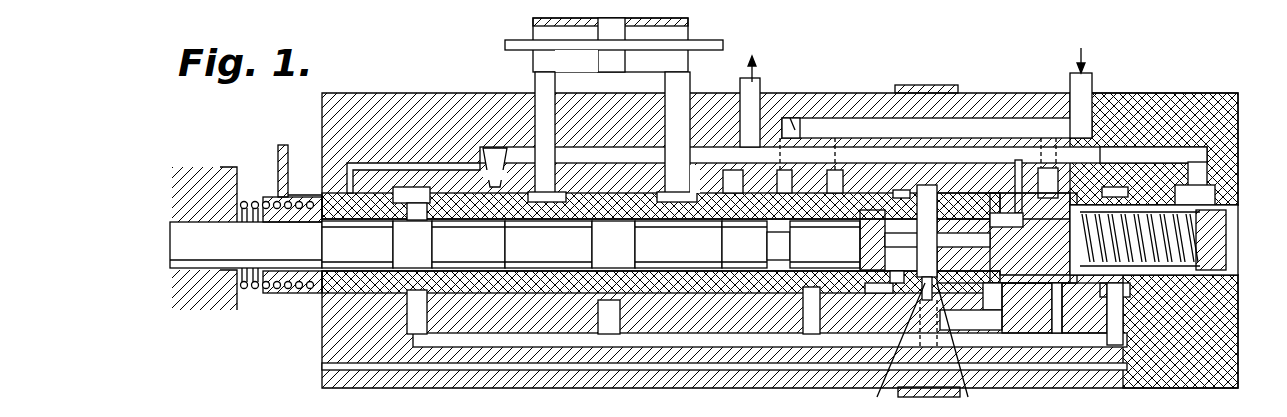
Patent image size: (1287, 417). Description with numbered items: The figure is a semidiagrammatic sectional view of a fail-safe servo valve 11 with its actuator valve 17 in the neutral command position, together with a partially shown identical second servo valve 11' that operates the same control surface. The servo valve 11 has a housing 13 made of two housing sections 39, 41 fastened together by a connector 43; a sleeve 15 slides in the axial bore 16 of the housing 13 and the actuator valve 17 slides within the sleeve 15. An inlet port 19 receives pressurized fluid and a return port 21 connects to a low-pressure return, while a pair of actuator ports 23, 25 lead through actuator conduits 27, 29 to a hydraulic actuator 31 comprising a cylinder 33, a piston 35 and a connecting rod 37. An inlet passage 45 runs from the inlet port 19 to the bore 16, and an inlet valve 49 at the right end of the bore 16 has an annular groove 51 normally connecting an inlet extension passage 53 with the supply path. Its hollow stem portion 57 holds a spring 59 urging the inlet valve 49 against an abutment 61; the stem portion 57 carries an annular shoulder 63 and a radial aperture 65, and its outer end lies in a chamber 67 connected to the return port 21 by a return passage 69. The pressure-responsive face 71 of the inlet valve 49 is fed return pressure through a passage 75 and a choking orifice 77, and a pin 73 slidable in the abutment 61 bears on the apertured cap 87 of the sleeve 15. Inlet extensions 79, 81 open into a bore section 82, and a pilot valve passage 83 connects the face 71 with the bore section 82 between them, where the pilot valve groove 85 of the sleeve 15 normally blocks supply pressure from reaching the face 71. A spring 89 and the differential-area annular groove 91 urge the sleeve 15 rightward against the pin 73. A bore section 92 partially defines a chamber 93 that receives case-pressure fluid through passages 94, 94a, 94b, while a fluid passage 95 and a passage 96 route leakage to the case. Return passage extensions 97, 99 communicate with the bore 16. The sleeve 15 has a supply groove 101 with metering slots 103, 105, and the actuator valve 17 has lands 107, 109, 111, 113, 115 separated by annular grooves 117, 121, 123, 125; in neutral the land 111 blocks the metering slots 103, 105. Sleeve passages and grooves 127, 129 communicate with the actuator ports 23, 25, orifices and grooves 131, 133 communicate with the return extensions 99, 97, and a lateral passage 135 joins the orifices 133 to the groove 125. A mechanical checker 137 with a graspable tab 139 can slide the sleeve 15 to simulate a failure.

The fail-safe servo valve 11 is at (295, 154).
The second fail-safe servo valve 11' is at (187, 166).
The housing 13 is at (1196, 88).
The sleeve 15 is at (318, 302).
The axial bore 16 is at (323, 194).
The actuator valve 17 is at (265, 247).
The inlet port 19 is at (1090, 86).
The return port 21 is at (762, 84).
The actuator port 23 is at (548, 118).
The actuator port 25 is at (690, 108).
The actuator conduit 27 is at (540, 86).
The actuator conduit 29 is at (694, 92).
The hydraulic actuator 31 is at (532, 22).
The cylinder 33 is at (690, 28).
The piston 35 is at (626, 54).
The connecting rod 37 is at (575, 61).
The housing section 39 is at (835, 380).
The housing section 41 is at (1080, 380).
The connector 43 is at (922, 397).
The inlet passage 45 is at (985, 128).
The inlet valve 49 is at (1055, 258).
The annular groove 51 is at (1058, 194).
The inlet extension passage 53 is at (1048, 175).
The hollow stem portion 57 is at (1220, 262).
The spring 59 is at (1218, 233).
The abutment 61 is at (978, 227).
The annular shoulder 63 is at (1120, 290).
The aperture 65 is at (1080, 293).
The chamber 67 is at (1200, 192).
The return passage 69 is at (1195, 153).
The pressure-responsive face 71 is at (990, 266).
The pin 73 is at (945, 215).
The passage 75 is at (1014, 180).
The choking orifice 77 is at (1022, 222).
The inlet extension 79 is at (795, 125).
The inlet extension 81 is at (836, 140).
The bore section 82 is at (806, 133).
The pilot valve passage 83 is at (985, 320).
The pilot valve groove 85 is at (803, 300).
The apertured cap 87 is at (888, 238).
The spring 89 is at (280, 292).
The annular groove 91 is at (410, 186).
The bore section 92 is at (895, 194).
The chamber 93 is at (920, 278).
The passage 94 is at (322, 367).
The passage 94a is at (882, 392).
The passage 94b is at (965, 390).
The fluid passage 95 is at (850, 163).
The passage 96 is at (347, 190).
The return passage extension 97 is at (807, 110).
The return passage extension 99 is at (486, 152).
The supply groove 101 is at (843, 158).
The metering slot 103 is at (595, 290).
The metering slot 105 is at (613, 244).
The land 107 is at (373, 255).
The land 109 is at (485, 255).
The land 111 is at (586, 239).
The land 113 is at (761, 255).
The land 115 is at (856, 260).
The annular groove 117 is at (412, 244).
The annular groove 121 is at (522, 244).
The annular groove 123 is at (678, 244).
The annular groove 125 is at (778, 236).
The passages and grooves 127 is at (530, 288).
The passages and grooves 129 is at (699, 242).
The orifices and grooves 131 is at (500, 188).
The orifices and grooves 133 is at (700, 190).
The lateral passage 135 is at (733, 185).
The mechanical checker 137 is at (284, 145).
The tab 139 is at (278, 151).